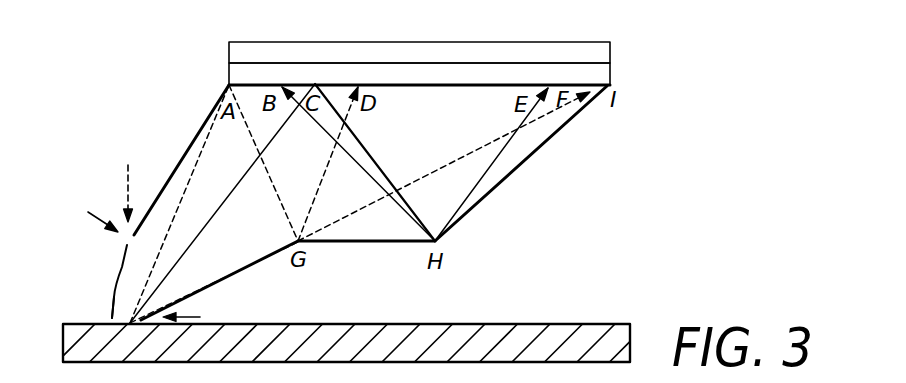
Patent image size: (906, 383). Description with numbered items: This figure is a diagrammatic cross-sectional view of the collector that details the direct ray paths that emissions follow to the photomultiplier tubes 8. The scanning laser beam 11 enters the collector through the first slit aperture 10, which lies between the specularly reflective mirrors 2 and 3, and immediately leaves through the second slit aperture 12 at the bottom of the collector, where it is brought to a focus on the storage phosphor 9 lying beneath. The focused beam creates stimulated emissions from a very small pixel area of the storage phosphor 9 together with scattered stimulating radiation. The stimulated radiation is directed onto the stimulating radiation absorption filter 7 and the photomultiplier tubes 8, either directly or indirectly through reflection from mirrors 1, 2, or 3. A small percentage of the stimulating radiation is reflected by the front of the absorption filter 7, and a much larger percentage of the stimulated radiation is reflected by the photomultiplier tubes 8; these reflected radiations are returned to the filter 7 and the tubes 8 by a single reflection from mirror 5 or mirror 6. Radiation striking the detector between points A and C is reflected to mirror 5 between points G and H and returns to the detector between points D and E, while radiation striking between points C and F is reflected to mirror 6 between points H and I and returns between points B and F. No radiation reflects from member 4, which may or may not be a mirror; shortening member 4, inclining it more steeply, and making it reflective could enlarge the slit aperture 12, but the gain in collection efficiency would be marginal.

The mirror 1 is at (113, 312).
The mirror 2 is at (118, 273).
The mirror 3 is at (192, 146).
The member 4 is at (227, 277).
The mirror 5 is at (352, 242).
The mirror 6 is at (500, 182).
The stimulating radiation absorption filter 7 is at (442, 70).
The photomultiplier tubes 8 is at (388, 50).
The storage phosphor 9 is at (377, 326).
The first slit aperture 10 is at (86, 213).
The scanning laser beam 11 is at (133, 180).
The second slit aperture 12 is at (197, 317).